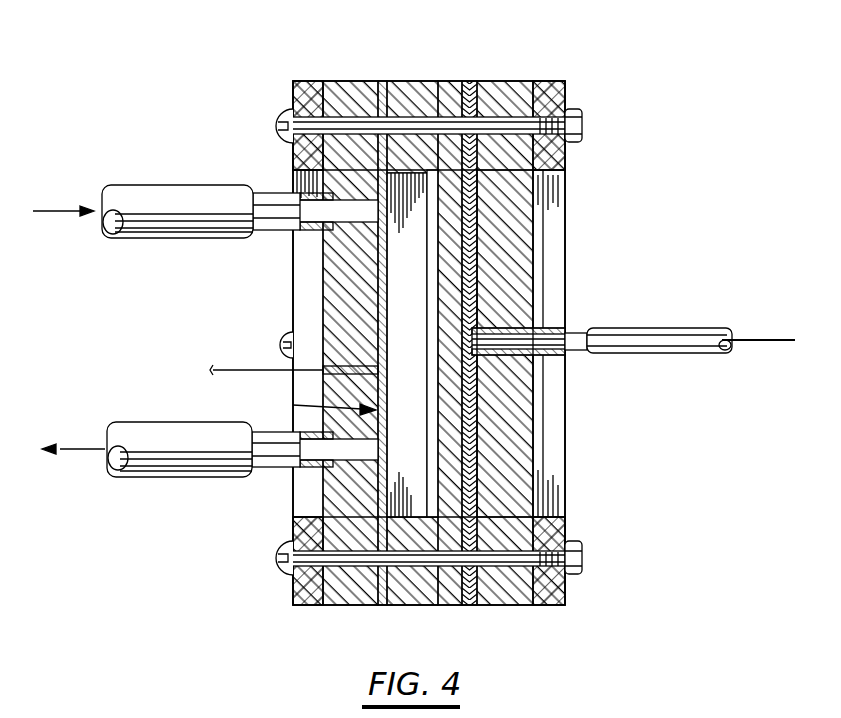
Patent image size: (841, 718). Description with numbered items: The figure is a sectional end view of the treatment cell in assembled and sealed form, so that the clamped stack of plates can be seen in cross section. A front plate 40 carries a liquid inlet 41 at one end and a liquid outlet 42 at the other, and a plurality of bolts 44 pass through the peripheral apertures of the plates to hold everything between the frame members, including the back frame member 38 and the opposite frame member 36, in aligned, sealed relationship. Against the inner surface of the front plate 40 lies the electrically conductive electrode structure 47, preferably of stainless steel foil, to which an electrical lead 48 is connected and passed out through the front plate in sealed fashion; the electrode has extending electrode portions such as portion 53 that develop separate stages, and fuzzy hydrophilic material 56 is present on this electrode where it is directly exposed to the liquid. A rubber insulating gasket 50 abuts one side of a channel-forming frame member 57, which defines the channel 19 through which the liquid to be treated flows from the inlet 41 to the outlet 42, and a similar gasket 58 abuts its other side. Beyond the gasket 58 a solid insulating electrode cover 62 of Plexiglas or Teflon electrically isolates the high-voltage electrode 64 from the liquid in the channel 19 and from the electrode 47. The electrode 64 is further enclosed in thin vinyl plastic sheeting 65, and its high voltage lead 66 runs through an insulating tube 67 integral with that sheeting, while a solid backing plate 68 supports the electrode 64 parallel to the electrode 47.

The channel 19 is at (408, 345).
The lower clamping frame 36 is at (300, 582).
The back frame member 38 is at (550, 527).
The front plate 40 is at (337, 87).
The liquid inlet 41 is at (280, 207).
The liquid outlet 42 is at (278, 450).
The bolts 44 is at (364, 125).
The electrode structure 47 is at (293, 405).
The electrical lead 48 is at (263, 370).
The rubber insulating gasket 50 is at (383, 90).
The extending electrode portion 53 is at (387, 290).
The fuzzy hydrophilic material 56 is at (390, 265).
The channel-forming frame member 57 is at (417, 88).
The gasket 58 is at (438, 92).
The insulating electrode cover 62 is at (447, 597).
The high-voltage electrode 64 is at (540, 275).
The vinyl plastic sheeting 65 is at (477, 577).
The high voltage lead 66 is at (765, 340).
The insulating tube 67 is at (660, 328).
The backing plate 68 is at (523, 462).